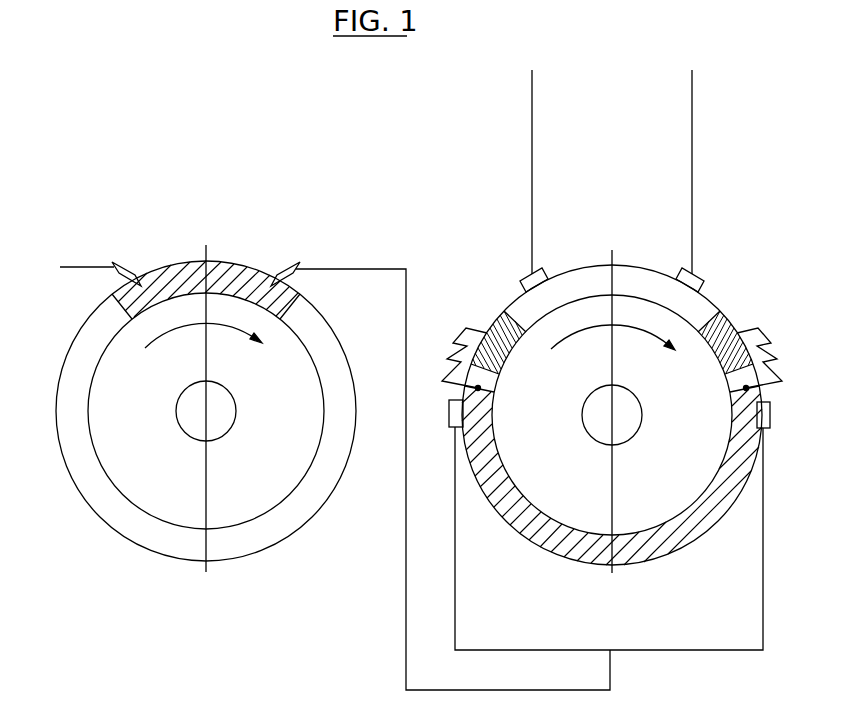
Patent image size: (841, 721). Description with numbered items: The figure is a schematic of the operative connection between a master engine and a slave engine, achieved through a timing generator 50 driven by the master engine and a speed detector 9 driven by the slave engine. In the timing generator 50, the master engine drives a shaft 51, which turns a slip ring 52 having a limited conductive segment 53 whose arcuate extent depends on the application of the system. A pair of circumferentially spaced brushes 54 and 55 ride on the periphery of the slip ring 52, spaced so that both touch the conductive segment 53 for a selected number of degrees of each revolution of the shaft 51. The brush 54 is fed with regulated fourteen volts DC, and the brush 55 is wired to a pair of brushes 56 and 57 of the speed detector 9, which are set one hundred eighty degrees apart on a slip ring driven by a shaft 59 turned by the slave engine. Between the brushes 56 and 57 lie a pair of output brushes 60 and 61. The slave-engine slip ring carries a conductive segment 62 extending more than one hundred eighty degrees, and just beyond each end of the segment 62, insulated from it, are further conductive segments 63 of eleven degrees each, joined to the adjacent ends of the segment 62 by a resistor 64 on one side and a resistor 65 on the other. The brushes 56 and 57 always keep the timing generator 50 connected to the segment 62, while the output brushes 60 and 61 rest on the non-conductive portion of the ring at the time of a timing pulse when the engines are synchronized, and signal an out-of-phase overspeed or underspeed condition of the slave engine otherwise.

The rotary switch assembly 9 is at (533, 557).
The timing generator 50 is at (116, 548).
The shaft 51 is at (222, 417).
The slip ring 52 is at (286, 538).
The conductive segment 53 is at (230, 278).
The brush 54 is at (136, 266).
The brush 55 is at (292, 270).
The brush 56 is at (452, 427).
The brush 57 is at (771, 415).
The shaft 59 is at (630, 423).
The output brush 60 is at (547, 272).
The output brush 61 is at (677, 272).
The conductive segment 62 is at (692, 543).
The conductive segments 63 is at (496, 345).
The resistor 64 is at (453, 345).
The resistor 65 is at (770, 360).